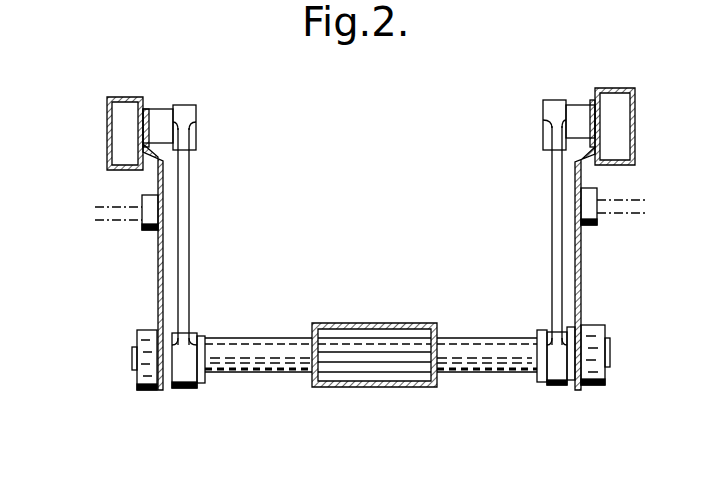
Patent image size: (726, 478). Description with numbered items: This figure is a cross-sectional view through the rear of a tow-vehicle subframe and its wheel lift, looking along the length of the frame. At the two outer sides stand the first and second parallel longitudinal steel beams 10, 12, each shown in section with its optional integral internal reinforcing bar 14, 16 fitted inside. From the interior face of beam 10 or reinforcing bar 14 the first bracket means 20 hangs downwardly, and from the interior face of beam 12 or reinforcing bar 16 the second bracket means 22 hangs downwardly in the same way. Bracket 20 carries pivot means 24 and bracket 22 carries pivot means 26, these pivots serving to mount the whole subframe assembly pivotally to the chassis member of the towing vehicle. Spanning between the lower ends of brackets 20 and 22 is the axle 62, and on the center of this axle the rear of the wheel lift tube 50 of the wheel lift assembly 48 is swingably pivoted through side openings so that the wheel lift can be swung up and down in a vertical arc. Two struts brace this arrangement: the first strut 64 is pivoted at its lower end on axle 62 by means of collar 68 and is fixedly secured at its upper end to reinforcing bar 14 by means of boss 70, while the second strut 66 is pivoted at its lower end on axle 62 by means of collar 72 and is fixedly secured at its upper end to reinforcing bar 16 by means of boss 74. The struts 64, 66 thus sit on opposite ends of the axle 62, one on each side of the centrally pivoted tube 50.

The first longitudinal steel beam 10 is at (107, 96).
The second longitudinal steel beam 12 is at (637, 90).
The reinforcing bar 14 is at (157, 115).
The reinforcing bar 16 is at (578, 103).
The first bracket means 20 is at (157, 270).
The second bracket means 22 is at (583, 278).
The pivot means 24 is at (142, 193).
The pivot means 26 is at (598, 189).
The wheel lift assembly 48 is at (372, 322).
The telescoping tube member 50 is at (416, 323).
The axle 62 is at (396, 388).
The first strut 64 is at (190, 245).
The second strut 66 is at (552, 243).
The collar 68 is at (183, 388).
The boss 70 is at (197, 112).
The collar 72 is at (555, 388).
The boss 74 is at (543, 113).